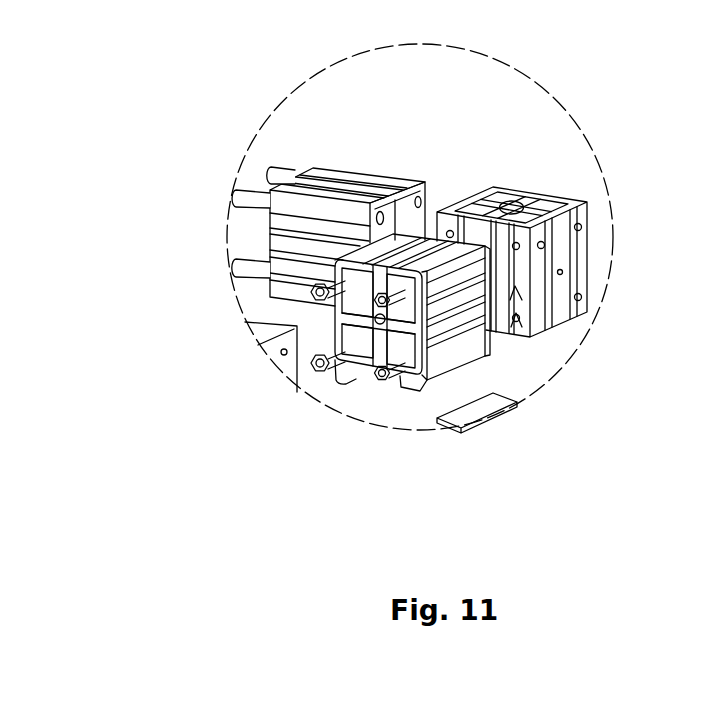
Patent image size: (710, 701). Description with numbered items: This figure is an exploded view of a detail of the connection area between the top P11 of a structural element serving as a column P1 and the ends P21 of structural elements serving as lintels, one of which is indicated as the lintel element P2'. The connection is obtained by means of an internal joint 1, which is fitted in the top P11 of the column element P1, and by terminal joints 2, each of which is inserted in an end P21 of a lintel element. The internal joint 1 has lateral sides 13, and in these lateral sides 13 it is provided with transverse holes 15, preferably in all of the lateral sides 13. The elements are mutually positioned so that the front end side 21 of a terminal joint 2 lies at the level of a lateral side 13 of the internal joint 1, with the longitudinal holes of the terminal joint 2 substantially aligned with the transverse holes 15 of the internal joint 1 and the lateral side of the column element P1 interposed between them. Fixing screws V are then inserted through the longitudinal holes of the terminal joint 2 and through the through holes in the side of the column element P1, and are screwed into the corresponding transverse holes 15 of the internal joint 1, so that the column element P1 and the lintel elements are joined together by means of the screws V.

The internal joint 1 is at (564, 247).
The terminal joint 2 is at (354, 173).
The front end side 21 is at (441, 194).
The lateral side 13 is at (518, 290).
The transverse hole 15 is at (498, 338).
The fixing screws V is at (381, 383).
The structural element serving as a column P1 is at (534, 414).
The top of the column element P11 is at (479, 408).
The second position P2' is at (201, 357).
The end of the lintel element P21 is at (285, 356).